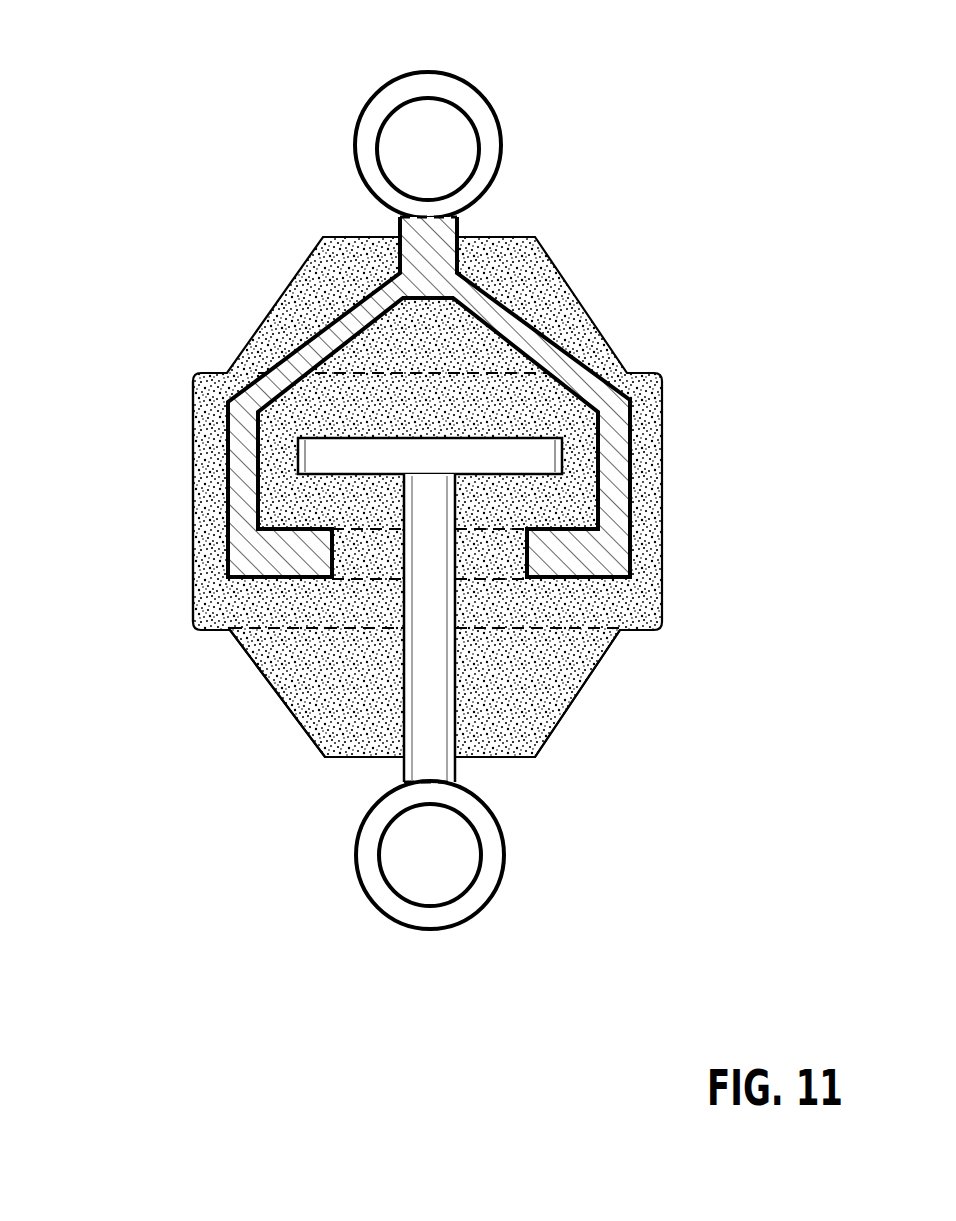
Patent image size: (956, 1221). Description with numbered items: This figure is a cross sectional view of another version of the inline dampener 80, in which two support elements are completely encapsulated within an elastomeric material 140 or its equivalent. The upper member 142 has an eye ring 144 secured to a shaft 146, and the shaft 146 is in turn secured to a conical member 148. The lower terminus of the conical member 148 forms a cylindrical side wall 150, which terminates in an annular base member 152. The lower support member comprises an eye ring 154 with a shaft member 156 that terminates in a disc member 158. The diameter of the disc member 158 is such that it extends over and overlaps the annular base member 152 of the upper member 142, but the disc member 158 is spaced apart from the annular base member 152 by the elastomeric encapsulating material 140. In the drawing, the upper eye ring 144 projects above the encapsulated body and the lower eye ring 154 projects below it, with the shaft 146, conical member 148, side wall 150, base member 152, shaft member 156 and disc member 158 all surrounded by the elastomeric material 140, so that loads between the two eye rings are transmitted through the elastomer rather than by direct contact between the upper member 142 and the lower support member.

The inline dampener 80 is at (455, 480).
The elastomeric material 140 is at (640, 392).
The upper member 142 is at (475, 302).
The eye ring 144 is at (467, 102).
The shaft 146 is at (458, 233).
The conical member 148 is at (430, 336).
The cylindrical side wall 150 is at (193, 528).
The annular base member 152 is at (607, 575).
The eye ring 154 is at (492, 862).
The shaft member 156 is at (437, 718).
The disc member 158 is at (503, 460).